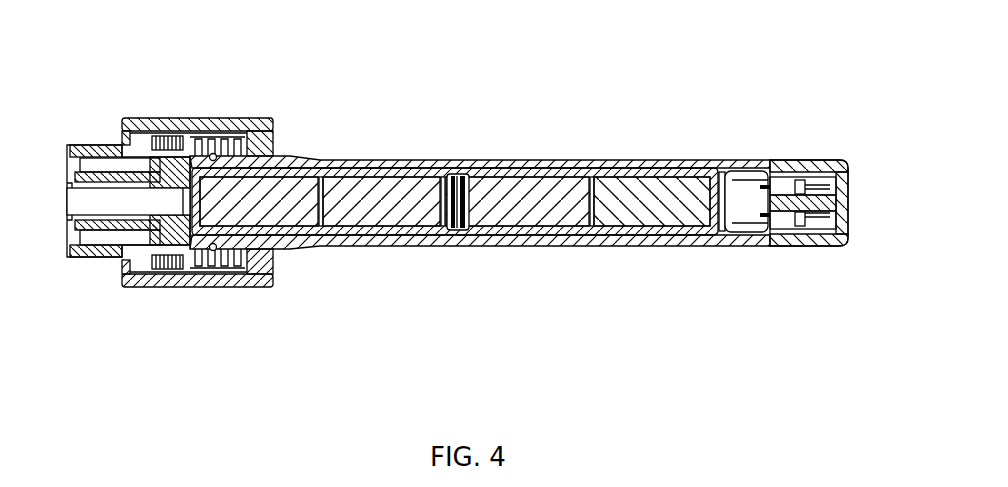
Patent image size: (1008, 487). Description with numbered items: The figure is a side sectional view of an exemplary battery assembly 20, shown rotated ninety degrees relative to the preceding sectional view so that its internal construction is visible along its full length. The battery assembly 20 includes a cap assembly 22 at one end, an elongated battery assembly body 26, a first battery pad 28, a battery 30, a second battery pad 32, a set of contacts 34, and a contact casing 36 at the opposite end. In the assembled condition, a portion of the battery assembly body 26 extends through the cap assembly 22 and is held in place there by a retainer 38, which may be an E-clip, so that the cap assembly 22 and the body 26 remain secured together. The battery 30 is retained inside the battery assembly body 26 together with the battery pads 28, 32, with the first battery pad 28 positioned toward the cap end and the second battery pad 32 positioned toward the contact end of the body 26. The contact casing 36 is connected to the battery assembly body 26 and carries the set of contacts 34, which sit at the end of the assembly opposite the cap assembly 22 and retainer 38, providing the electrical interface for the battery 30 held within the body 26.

The battery assembly 20 is at (457, 208).
The cap assembly 22 is at (178, 118).
The battery assembly body 26 is at (365, 157).
The first battery pad 28 is at (198, 233).
The battery 30 is at (487, 167).
The second battery pad 32 is at (722, 236).
The set of contacts 34 is at (816, 184).
The contact casing 36 is at (783, 167).
The retainer 38 is at (67, 153).